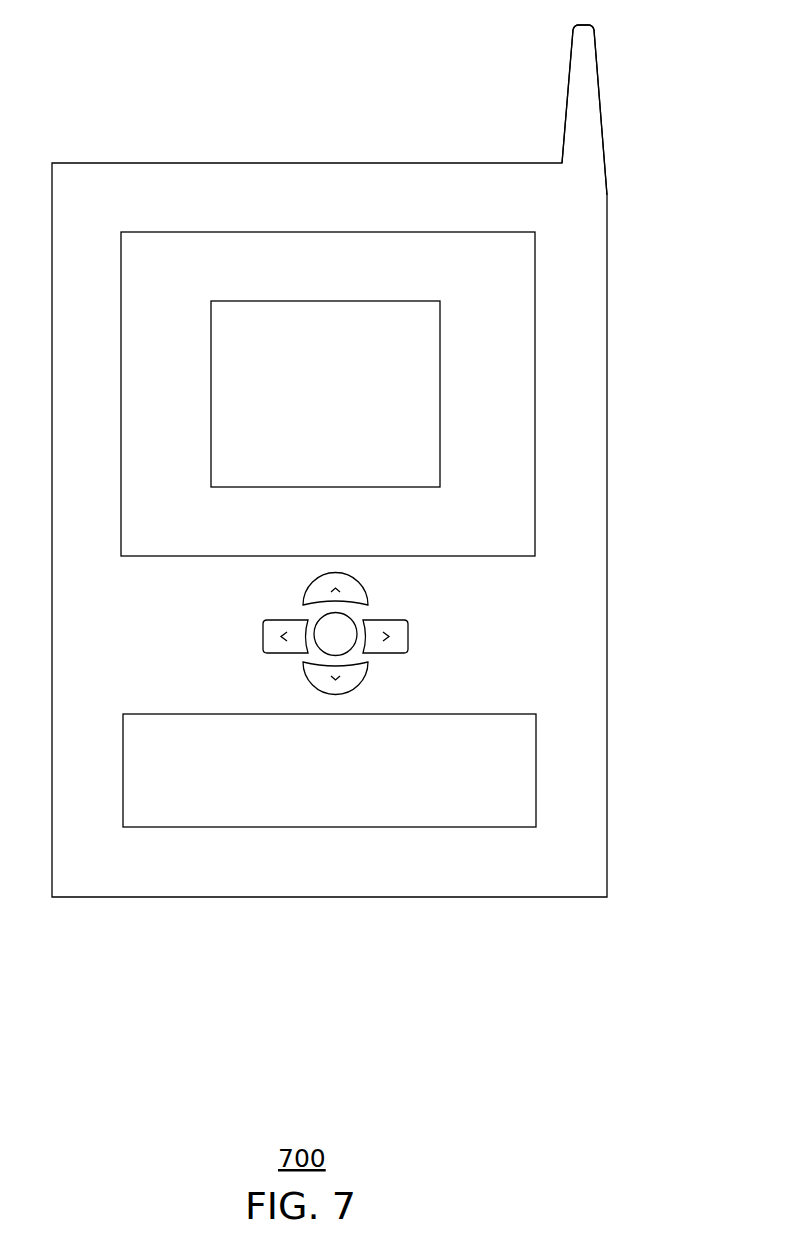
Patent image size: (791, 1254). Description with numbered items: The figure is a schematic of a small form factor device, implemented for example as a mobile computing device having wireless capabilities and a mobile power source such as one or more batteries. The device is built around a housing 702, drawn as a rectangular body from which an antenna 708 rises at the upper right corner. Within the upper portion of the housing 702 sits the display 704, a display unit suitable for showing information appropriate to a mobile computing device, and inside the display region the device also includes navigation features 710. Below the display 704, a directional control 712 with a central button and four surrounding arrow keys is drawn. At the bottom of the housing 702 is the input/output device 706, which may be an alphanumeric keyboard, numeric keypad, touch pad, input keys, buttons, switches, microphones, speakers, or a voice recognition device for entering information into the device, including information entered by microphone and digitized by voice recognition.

The housing 702 is at (607, 513).
The display 704 is at (475, 231).
The input/output (I/O) device 706 is at (537, 742).
The antenna 708 is at (570, 70).
The navigation features 710 is at (386, 300).
The navigation control 712 is at (424, 619).